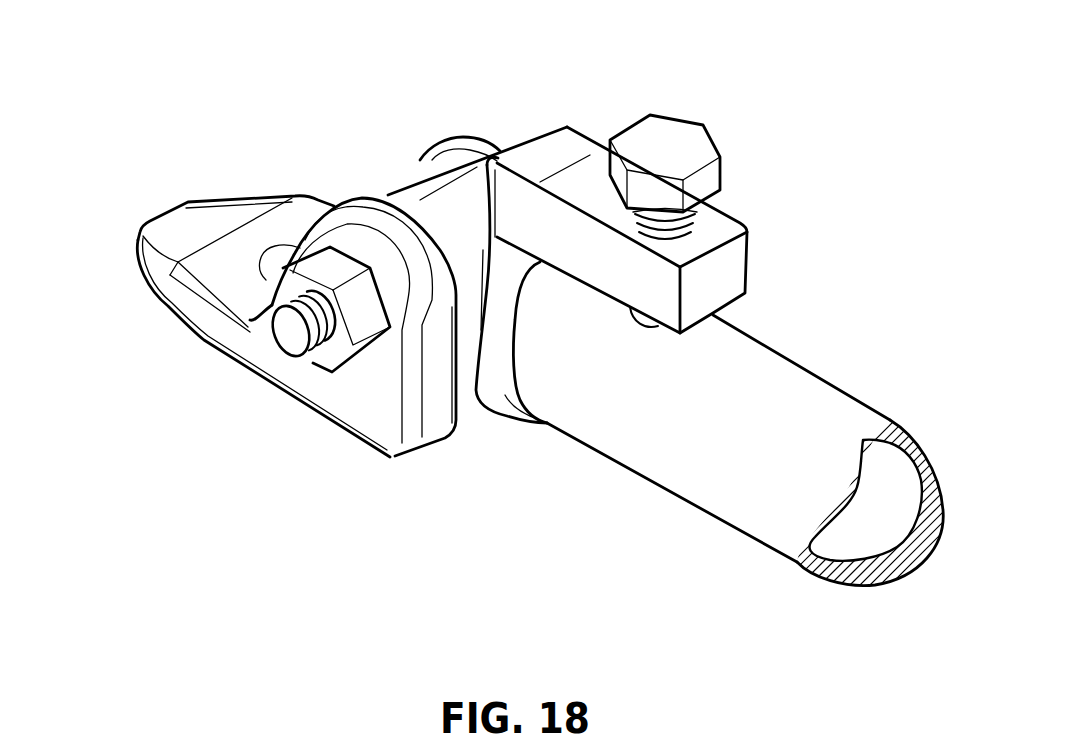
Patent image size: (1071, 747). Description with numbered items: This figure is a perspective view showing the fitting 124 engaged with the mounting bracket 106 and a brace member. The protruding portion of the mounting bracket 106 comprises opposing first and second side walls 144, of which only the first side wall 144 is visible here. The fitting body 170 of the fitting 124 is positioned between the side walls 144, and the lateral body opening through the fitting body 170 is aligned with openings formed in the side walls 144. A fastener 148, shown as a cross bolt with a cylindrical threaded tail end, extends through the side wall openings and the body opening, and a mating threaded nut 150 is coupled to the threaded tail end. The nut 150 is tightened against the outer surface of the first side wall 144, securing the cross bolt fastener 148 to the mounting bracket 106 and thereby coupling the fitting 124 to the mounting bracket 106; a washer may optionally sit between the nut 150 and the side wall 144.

The mounting bracket 106 is at (150, 321).
The fitting 124 is at (748, 196).
The side wall 144 is at (367, 210).
The fastener 148 is at (293, 335).
The nut 150 is at (356, 325).
The fitting body 170 is at (430, 212).